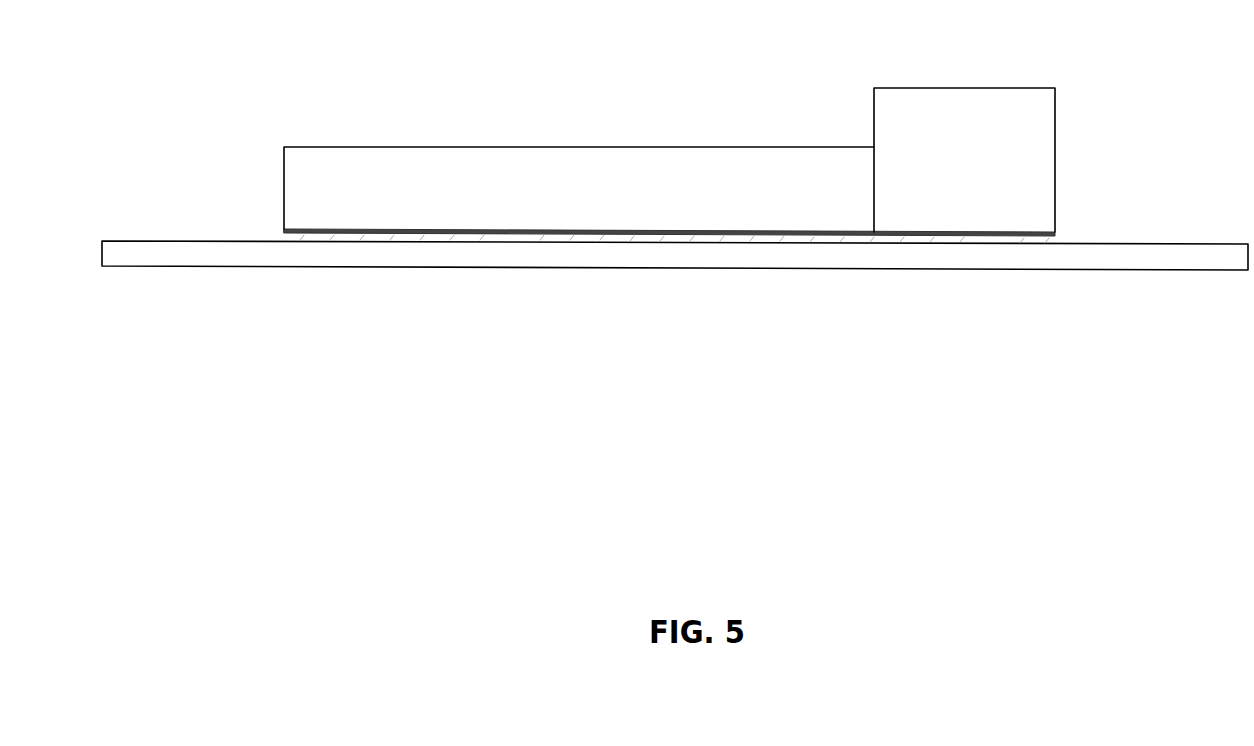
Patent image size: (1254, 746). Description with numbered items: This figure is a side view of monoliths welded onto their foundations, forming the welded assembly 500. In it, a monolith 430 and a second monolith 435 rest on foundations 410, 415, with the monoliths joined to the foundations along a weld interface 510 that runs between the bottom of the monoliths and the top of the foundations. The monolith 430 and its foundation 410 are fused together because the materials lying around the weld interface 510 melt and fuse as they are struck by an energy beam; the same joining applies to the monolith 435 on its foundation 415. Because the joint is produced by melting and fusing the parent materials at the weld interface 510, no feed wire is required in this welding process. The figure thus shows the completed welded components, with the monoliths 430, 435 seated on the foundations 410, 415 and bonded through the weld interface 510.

The foundation 410 is at (520, 236).
The foundation 415 is at (995, 238).
The monolith 430 is at (437, 162).
The monolith 435 is at (972, 108).
The assembly 500 is at (236, 510).
The weld interface 510 is at (284, 229).